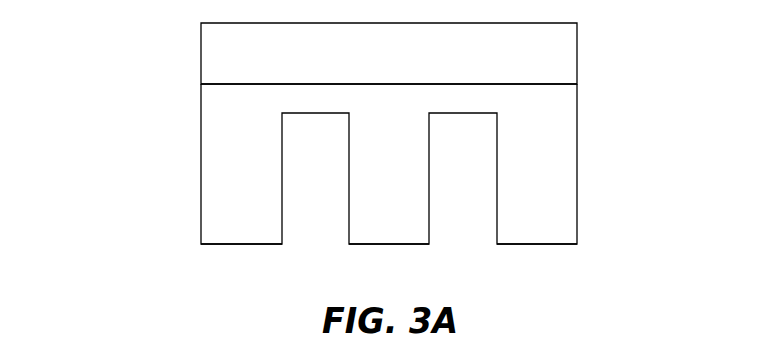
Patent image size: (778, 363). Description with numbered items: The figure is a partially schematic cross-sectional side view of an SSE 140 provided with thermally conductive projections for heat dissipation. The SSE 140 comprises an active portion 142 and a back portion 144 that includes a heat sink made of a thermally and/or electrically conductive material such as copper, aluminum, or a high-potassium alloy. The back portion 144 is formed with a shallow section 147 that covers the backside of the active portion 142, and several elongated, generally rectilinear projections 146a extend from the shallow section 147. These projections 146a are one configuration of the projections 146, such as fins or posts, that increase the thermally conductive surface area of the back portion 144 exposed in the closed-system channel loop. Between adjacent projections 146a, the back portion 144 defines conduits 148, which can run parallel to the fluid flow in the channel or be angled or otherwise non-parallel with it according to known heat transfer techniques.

The SSE 140 is at (146, 40).
The active portion 142 is at (557, 52).
The back portion 144 is at (212, 86).
The projections 146 is at (220, 165).
The shallow section 147 is at (318, 113).
The elongated rectilinear projections 146a is at (272, 238).
The conduits 148 is at (332, 234).